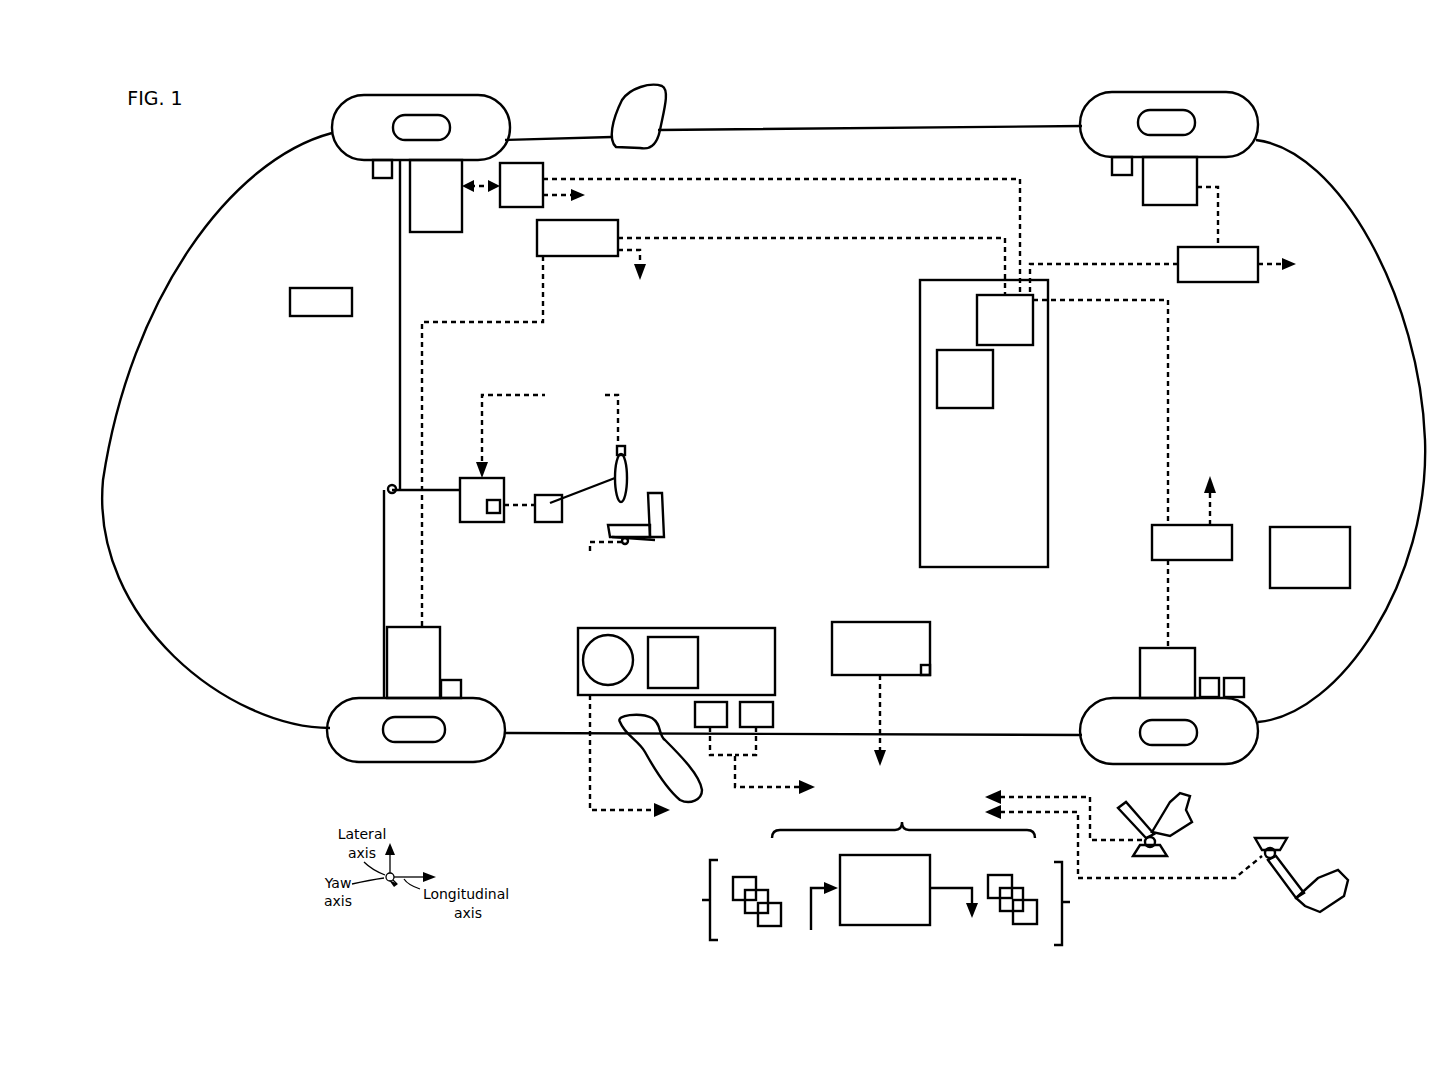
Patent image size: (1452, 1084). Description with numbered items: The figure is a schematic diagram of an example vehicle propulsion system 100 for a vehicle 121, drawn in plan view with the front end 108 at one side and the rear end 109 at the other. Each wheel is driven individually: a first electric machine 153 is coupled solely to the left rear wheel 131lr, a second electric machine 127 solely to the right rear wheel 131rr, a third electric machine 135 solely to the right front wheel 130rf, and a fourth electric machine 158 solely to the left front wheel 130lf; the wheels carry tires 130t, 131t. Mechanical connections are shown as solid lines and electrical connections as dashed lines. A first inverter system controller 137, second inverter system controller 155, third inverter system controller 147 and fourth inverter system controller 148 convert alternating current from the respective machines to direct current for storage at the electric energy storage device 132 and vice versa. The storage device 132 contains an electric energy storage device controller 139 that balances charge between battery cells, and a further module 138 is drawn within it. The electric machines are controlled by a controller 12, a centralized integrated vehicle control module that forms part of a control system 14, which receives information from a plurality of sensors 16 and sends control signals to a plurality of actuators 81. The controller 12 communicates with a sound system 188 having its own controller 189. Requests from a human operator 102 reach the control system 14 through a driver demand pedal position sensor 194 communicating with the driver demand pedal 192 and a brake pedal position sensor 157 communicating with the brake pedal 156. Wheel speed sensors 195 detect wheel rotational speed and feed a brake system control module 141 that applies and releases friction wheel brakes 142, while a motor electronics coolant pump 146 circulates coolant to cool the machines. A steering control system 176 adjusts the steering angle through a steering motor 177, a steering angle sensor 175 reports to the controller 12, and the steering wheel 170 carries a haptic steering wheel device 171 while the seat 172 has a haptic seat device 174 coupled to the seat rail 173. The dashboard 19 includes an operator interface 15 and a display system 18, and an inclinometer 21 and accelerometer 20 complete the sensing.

The vehicle propulsion system 100 is at (910, 98).
The front end of vehicle 108 is at (136, 186).
The rear end of vehicle 109 is at (1368, 140).
The vehicle 121 is at (1378, 730).
The tire 130t is at (432, 95).
The right front wheel 130rf is at (450, 128).
The left front wheel 130lf is at (445, 730).
The tire 131t is at (1208, 92).
The right rear wheel 131rr is at (1195, 124).
The left rear wheel 131lr is at (1197, 733).
The friction wheel brakes 142 is at (380, 178).
The wheel speed sensor 195 is at (1210, 678).
The third electric machine 135 is at (431, 325).
The third inverter system controller 147 is at (741, 229).
The fourth inverter system controller 148 is at (713, 423).
The motor electronics coolant pump 146 is at (321, 302).
The second electric machine 127 is at (1180, 202).
The second inverter system controller 155 is at (1179, 271).
The electric energy storage device 132 is at (984, 423).
The battery controller 138 is at (1072, 410).
The electric energy storage device controller 139 is at (965, 379).
The first inverter system controller 137 is at (1192, 537).
The brake system control module 141 is at (1310, 557).
The first electric machine 153 is at (1167, 673).
The fourth electric machine 158 is at (422, 591).
The steering control system 176 is at (470, 477).
The steering motor 177 is at (494, 500).
The steering angle sensor 175 is at (548, 495).
The steering wheel 170 is at (628, 478).
The haptic steering wheel device 171 is at (625, 452).
The seat 172 is at (660, 497).
The seat rail 173 is at (652, 541).
The haptic seat device 174 is at (627, 545).
The dashboard 19 is at (715, 628).
The operator interface 15 is at (608, 660).
The display system 18 is at (673, 662).
The inclinometer 21 is at (755, 748).
The accelerometer 20 is at (754, 728).
The sound system 188 is at (881, 694).
The sound system controller 189 is at (930, 670).
The control system 14 is at (903, 807).
The controller 12 is at (894, 892).
The sensors 16 is at (705, 900).
The actuators 81 is at (1077, 903).
The driver demand pedal 192 is at (1130, 822).
The driver demand pedal position sensor 194 is at (1158, 842).
The human operator 102 is at (1166, 801).
The brake pedal position sensor 157 is at (1262, 851).
The brake pedal 156 is at (1290, 900).